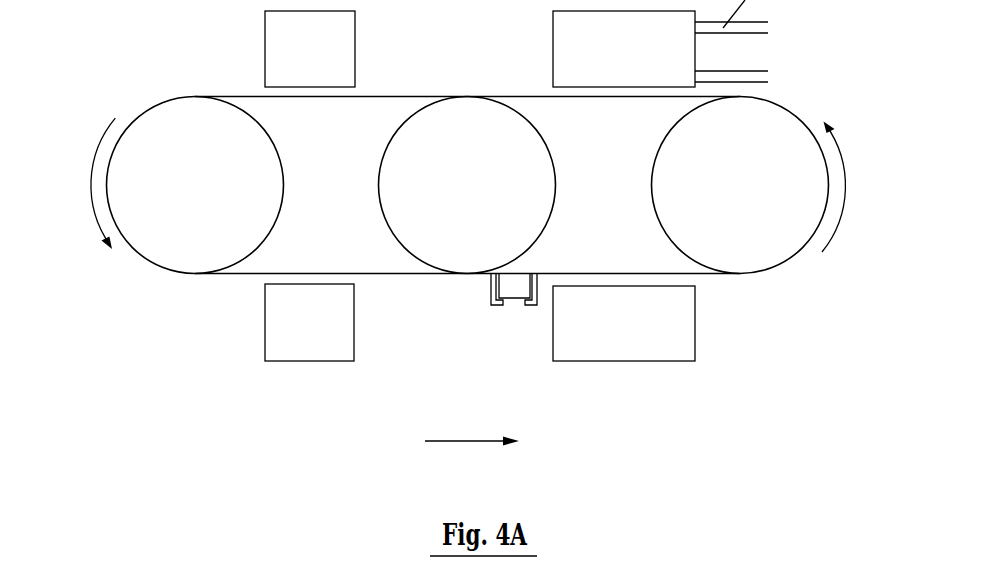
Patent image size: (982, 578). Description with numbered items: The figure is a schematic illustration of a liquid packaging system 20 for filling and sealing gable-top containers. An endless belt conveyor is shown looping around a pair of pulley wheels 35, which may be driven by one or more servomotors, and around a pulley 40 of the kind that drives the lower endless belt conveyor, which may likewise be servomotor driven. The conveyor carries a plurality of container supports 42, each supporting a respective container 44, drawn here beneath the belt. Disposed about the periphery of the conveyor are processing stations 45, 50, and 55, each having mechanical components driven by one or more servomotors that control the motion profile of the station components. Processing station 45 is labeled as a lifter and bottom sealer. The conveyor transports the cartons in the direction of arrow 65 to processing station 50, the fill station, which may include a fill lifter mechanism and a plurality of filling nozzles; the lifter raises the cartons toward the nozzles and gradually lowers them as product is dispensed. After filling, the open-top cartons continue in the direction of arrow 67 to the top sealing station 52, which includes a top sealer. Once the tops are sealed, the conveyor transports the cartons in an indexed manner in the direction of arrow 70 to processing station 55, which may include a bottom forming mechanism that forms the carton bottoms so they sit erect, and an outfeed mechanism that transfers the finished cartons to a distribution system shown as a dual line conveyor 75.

The packaging system 20 is at (386, 150).
The pulley wheels 35 is at (203, 201).
The pulleys 40 is at (475, 201).
The arrow 65 is at (70, 183).
The arrow 70 is at (851, 187).
The processing station 45 is at (350, 49).
The processing station 55 is at (588, 49).
The dual line conveyor 75 is at (752, 74).
The processing station 50 is at (259, 338).
The top sealing station 52 is at (680, 341).
The container supports 42 is at (473, 346).
The container 44 is at (541, 346).
The arrow 67 is at (472, 464).